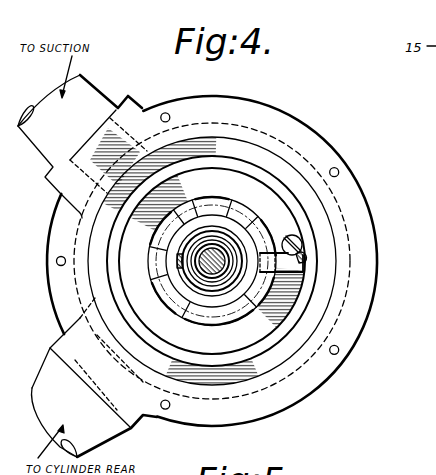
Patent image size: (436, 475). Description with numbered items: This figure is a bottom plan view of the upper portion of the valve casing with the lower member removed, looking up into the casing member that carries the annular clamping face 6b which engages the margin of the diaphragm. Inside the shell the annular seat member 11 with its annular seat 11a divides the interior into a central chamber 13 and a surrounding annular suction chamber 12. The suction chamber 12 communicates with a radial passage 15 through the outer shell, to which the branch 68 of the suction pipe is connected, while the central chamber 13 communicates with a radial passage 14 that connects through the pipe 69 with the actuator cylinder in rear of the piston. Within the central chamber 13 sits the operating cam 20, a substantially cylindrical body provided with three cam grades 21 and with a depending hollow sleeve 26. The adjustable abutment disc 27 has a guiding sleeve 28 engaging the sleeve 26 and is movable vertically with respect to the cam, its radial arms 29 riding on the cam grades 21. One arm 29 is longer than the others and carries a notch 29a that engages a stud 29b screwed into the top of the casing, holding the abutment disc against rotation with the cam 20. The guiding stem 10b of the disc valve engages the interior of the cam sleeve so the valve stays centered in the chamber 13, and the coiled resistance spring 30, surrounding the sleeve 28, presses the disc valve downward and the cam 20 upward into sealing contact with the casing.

The annular clamping face 6b is at (356, 334).
The guiding stem 10b is at (223, 247).
The annular seat member 11 is at (306, 208).
The annular seat 11a is at (306, 225).
The annular chamber 12 is at (331, 253).
The central chamber 13 is at (213, 251).
The radial passage 14 is at (72, 350).
The radial passage 15 is at (127, 130).
The operating cam 20 is at (113, 227).
The cam grades 21 is at (162, 281).
The depending hollow sleeve 26 is at (217, 247).
The adjustable abutment disc 27 is at (170, 245).
The guiding sleeve 28 is at (213, 237).
The radial arms 29 is at (183, 309).
The notch 29a is at (306, 267).
The stud 29b is at (303, 248).
The coiled spring 30 is at (185, 286).
The branch 68 is at (89, 89).
The pipe 69 is at (50, 382).